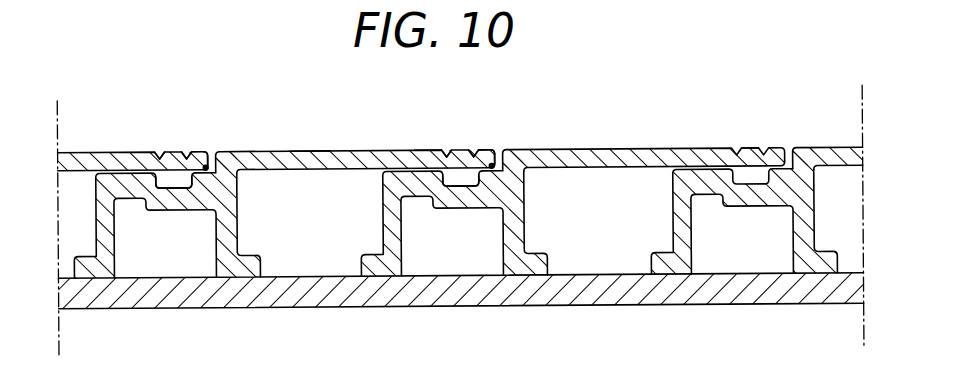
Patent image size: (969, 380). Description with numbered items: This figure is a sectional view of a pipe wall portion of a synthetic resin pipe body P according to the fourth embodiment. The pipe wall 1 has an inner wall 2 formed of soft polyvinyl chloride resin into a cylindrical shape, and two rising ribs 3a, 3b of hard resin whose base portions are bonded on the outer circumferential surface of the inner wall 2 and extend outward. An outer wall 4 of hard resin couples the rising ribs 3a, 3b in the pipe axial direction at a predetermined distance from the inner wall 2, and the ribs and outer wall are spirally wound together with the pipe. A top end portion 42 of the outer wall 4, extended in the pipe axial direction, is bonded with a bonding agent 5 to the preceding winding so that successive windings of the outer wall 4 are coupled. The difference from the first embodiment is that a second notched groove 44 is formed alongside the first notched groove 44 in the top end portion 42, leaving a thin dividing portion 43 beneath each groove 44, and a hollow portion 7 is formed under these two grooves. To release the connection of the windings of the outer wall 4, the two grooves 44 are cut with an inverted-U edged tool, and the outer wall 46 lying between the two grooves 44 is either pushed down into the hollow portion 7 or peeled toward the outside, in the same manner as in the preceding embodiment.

The pipe wall 1 is at (672, 143).
The inner wall 2 is at (691, 282).
The rising rib 3a is at (383, 220).
The rising rib 3b is at (525, 226).
The outer wall 4 is at (307, 161).
The bonding agent 5 is at (207, 167).
The hollow portion 7 is at (173, 179).
The top end portion 42 is at (488, 149).
The dividing portion 43 is at (428, 149).
The notched groove 44 is at (188, 156).
The outer wall between the grooves 46 is at (467, 158).
The pipe body P is at (763, 128).